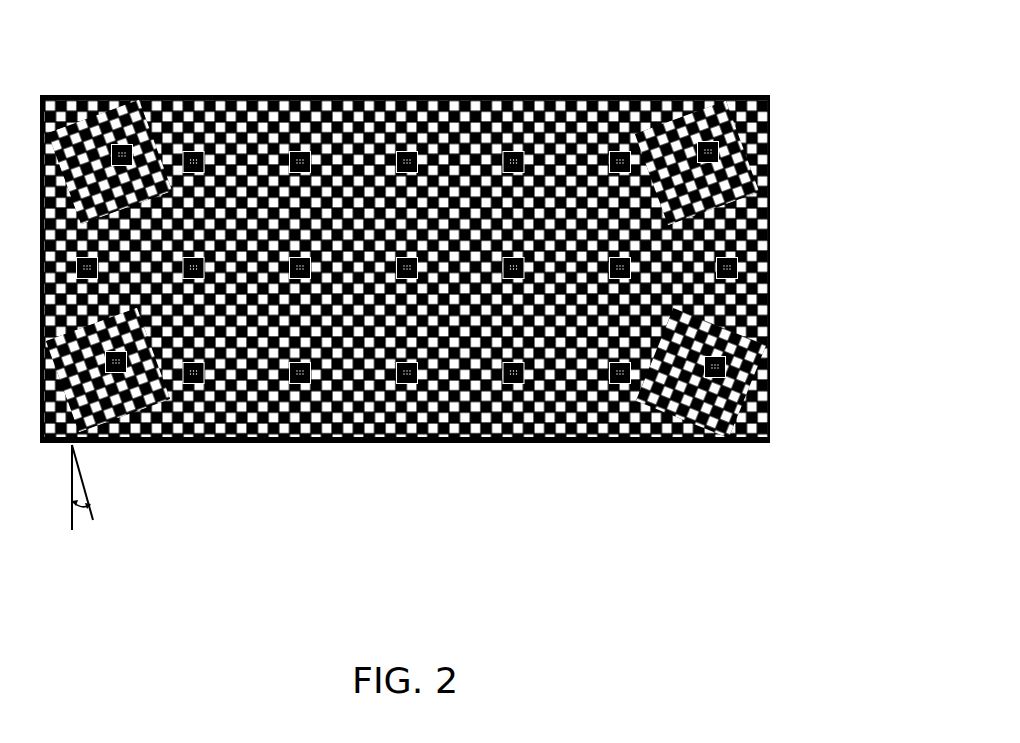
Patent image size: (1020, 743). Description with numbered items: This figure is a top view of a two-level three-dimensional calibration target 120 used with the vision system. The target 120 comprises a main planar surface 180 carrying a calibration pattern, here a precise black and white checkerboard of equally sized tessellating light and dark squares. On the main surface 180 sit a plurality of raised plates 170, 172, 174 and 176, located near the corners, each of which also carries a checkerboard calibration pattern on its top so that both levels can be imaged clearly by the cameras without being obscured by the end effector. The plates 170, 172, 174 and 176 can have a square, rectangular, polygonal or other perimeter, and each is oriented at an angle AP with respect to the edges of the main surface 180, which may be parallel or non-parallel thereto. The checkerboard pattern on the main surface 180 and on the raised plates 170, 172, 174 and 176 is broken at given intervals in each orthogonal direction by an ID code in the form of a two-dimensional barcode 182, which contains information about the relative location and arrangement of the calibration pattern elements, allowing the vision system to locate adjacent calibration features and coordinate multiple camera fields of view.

The calibration target 120 is at (513, 92).
The main planar surface 180 is at (362, 97).
The raised plate 170 is at (94, 92).
The raised plate 172 is at (716, 92).
The raised plate 174 is at (108, 445).
The raised plate 176 is at (714, 450).
The 2D barcode 182 is at (280, 97).
The angle AP is at (87, 532).